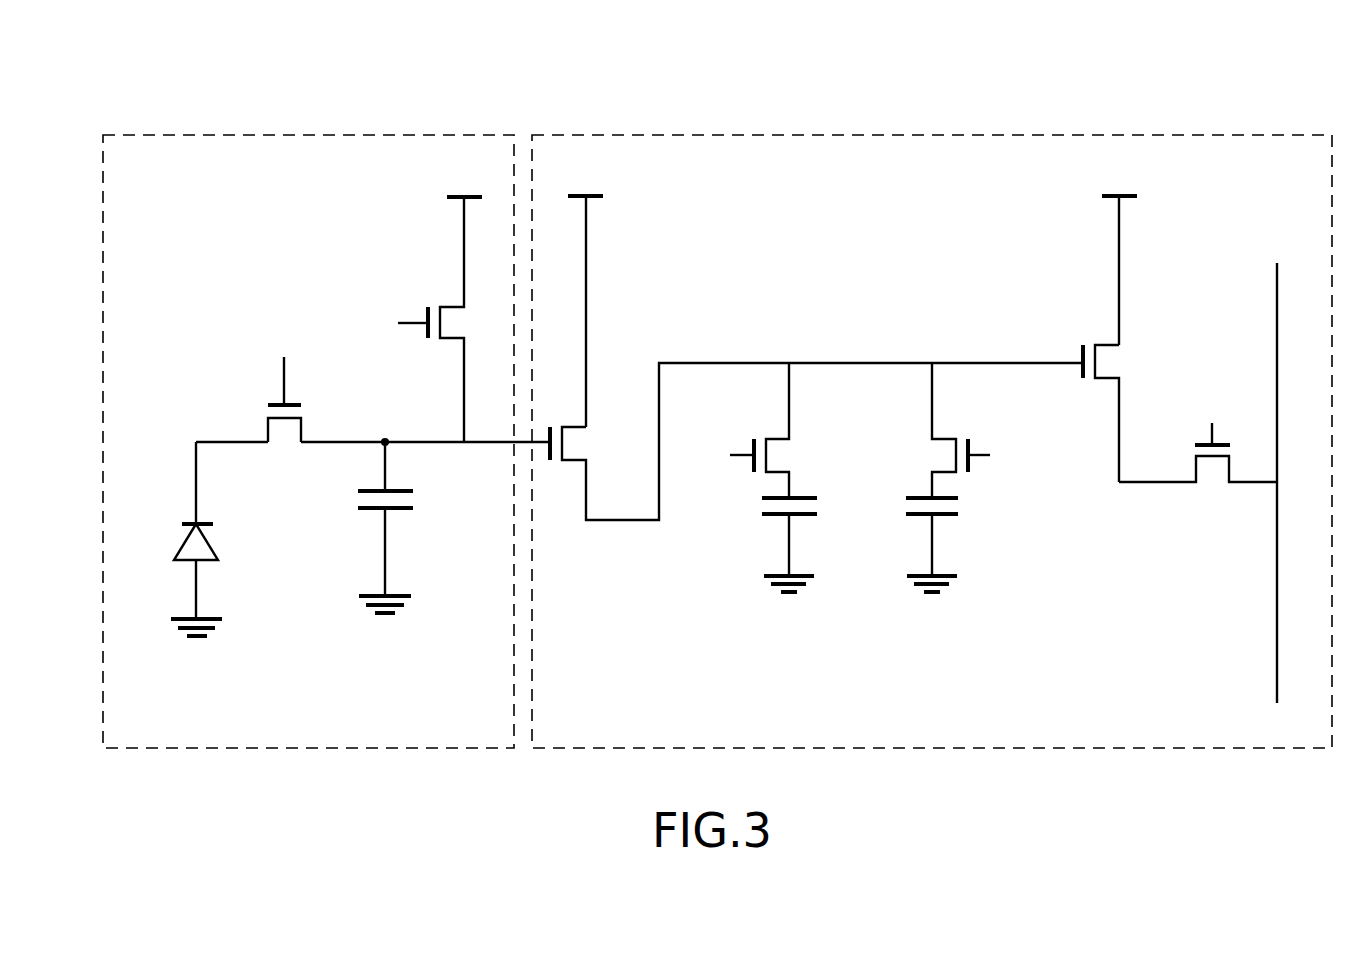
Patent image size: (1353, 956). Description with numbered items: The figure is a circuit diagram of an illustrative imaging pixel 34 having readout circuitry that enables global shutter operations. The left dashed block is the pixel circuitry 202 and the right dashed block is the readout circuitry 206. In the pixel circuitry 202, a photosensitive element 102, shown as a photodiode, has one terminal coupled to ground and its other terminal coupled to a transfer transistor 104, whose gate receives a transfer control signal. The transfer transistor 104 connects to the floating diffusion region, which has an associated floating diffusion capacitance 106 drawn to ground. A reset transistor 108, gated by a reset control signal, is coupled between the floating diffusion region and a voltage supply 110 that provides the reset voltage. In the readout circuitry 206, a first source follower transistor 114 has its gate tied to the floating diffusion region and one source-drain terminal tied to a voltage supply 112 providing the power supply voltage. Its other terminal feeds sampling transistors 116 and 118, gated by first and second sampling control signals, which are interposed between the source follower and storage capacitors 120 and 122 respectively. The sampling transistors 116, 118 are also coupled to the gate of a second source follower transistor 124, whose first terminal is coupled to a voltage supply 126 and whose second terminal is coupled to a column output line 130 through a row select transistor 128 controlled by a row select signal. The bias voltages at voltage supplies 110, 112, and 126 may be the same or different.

The imaging pixel 34 is at (185, 105).
The pixel circuitry 202 is at (329, 135).
The readout circuitry 206 is at (850, 135).
The photosensitive element 102 is at (218, 530).
The transfer transistor 104 is at (318, 430).
The floating diffusion capacitance 106 is at (424, 503).
The reset transistor 108 is at (412, 305).
The voltage supply 110 is at (452, 198).
The voltage supply 112 is at (596, 200).
The source follower transistor 114 is at (600, 420).
The sampling transistor 116 is at (795, 450).
The sampling transistor 118 is at (928, 455).
The first storage capacitor 120 is at (825, 518).
The storage capacitor 122 is at (965, 506).
The source follower transistor 124 is at (1098, 330).
The voltage supply 126 is at (1128, 198).
The row select transistor 128 is at (1210, 480).
The column output line 130 is at (1277, 290).